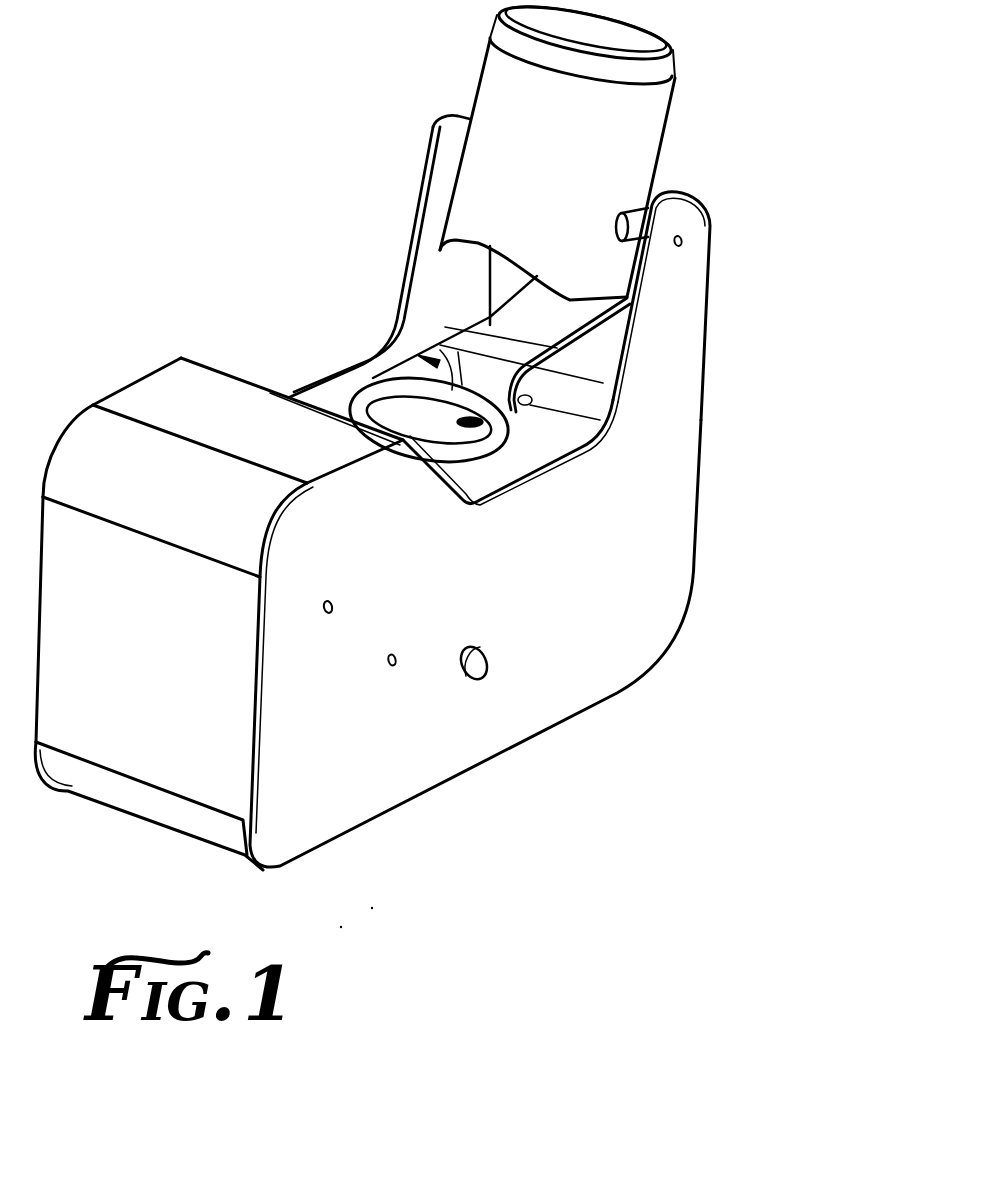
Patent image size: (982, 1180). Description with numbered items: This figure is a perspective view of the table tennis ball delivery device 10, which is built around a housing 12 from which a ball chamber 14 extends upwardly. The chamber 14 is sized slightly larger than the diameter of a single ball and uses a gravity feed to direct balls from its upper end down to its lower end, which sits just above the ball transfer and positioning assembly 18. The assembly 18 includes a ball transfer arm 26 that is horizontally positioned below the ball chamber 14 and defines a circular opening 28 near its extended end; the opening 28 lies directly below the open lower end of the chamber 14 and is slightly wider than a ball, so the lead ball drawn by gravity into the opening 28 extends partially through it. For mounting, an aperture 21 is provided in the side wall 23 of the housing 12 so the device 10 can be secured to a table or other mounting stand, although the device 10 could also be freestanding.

The table tennis ball delivery device 10 is at (717, 173).
The housing 12 is at (706, 313).
The ball chamber 14 is at (672, 110).
The ball transfer and positioning assembly 18 is at (580, 357).
The aperture 21 is at (630, 545).
The side wall 23 is at (478, 682).
The ball transfer arm 26 is at (492, 335).
The circular opening 28 is at (407, 417).